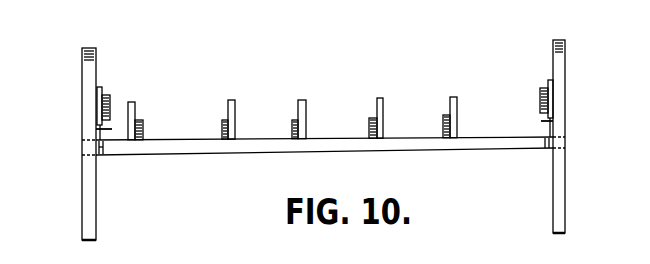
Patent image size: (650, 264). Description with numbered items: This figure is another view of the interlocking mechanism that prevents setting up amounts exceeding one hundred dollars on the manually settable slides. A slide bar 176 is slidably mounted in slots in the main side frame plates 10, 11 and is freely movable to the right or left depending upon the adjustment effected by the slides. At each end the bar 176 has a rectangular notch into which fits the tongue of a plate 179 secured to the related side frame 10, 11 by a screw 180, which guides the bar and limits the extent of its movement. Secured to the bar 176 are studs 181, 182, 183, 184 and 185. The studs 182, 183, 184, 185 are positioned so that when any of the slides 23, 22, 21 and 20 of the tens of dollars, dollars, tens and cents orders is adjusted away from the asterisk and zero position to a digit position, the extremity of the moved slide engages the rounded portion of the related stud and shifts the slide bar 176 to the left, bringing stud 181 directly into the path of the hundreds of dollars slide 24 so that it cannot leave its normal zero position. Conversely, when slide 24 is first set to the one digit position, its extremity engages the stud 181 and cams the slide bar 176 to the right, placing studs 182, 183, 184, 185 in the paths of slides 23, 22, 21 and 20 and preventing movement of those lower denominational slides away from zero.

The main side frame plate 10 is at (89, 211).
The main side frame plate 11 is at (560, 176).
The slide bar 176 is at (323, 147).
The plate 179 is at (100, 130).
The screw 180 is at (106, 99).
The manually settable slide 20 is at (457, 100).
The manually settable slide 21 is at (383, 100).
The manually settable slide 22 is at (304, 106).
The manually settable slide 23 is at (236, 106).
The manually settable slide 24 is at (132, 106).
The stud 181 is at (143, 124).
The stud 182 is at (222, 122).
The stud 183 is at (292, 128).
The stud 184 is at (369, 127).
The stud 185 is at (443, 124).